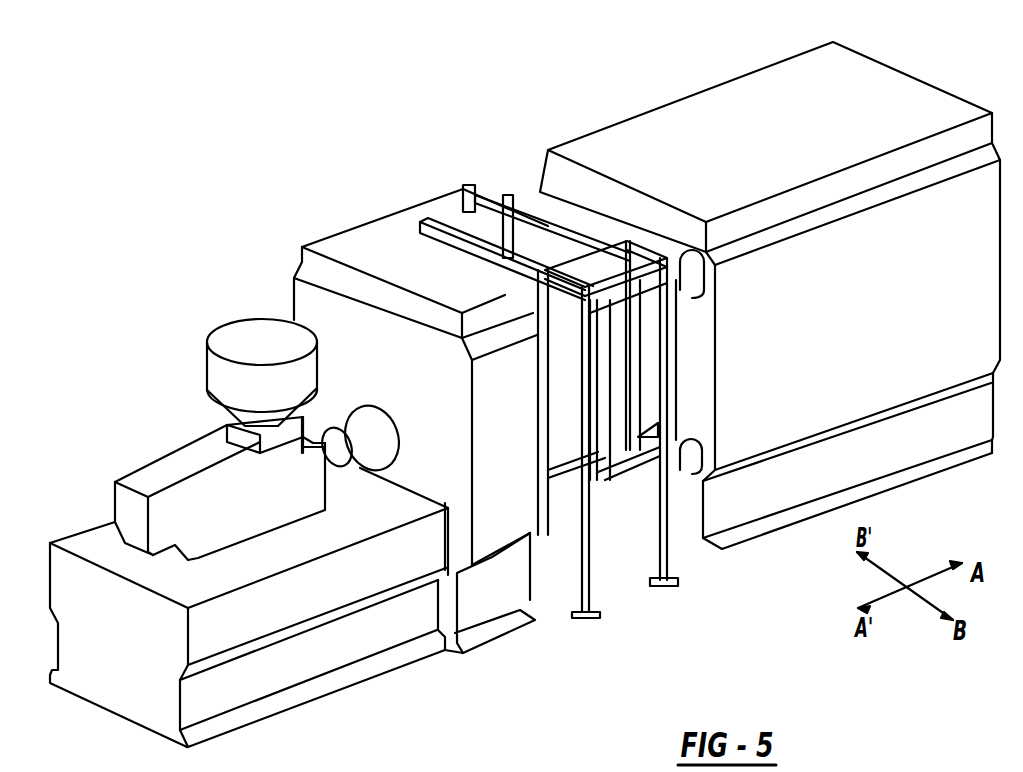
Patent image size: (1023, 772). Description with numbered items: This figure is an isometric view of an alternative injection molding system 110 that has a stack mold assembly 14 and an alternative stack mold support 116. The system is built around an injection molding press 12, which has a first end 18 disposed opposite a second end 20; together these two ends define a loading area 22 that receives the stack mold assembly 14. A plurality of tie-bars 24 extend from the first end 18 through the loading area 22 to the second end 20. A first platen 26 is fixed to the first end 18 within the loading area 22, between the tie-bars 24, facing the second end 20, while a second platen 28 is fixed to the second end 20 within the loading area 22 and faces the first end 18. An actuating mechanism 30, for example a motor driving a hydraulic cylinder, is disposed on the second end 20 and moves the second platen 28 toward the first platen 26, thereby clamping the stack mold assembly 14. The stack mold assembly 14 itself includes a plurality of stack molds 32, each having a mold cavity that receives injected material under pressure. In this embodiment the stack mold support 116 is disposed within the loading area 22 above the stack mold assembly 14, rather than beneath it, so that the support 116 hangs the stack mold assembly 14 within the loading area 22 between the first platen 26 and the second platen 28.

The injection molding system 110 is at (279, 118).
The injection molding press 12 is at (797, 123).
The first end 18 is at (713, 113).
The second end 20 is at (337, 237).
The loading area 22 is at (443, 157).
The tie-bars 24 is at (695, 260).
The first platen 26 is at (680, 497).
The second platen 28 is at (567, 462).
The actuating mechanism 30 is at (188, 410).
The stack molds 32 is at (630, 457).
The stack mold assembly 14 is at (602, 460).
The stack mold support 116 is at (437, 213).